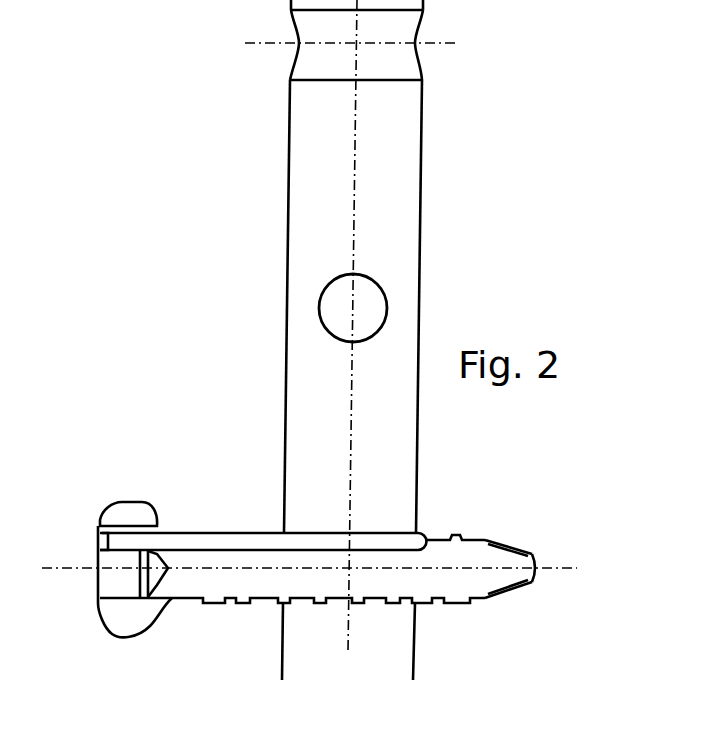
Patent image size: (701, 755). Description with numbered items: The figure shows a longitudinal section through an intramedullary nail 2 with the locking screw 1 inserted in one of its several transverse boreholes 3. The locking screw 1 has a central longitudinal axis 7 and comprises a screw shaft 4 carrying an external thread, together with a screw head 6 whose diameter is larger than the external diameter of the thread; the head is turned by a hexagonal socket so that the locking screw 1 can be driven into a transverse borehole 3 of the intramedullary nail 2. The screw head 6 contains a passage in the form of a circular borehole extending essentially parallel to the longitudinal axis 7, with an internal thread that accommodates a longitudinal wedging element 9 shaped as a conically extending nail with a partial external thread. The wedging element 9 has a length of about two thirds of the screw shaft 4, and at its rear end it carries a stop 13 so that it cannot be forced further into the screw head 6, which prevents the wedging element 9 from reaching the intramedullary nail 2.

The locking screw 1 is at (315, 587).
The intramedullary nail 2 is at (286, 213).
The transverse borehole 3 is at (395, 29).
The screw shaft 4 is at (465, 553).
The screw head 6 is at (132, 513).
The central longitudinal axis 7 is at (545, 570).
The longitudinal wedging element 9 is at (204, 535).
The stop 13 is at (104, 538).